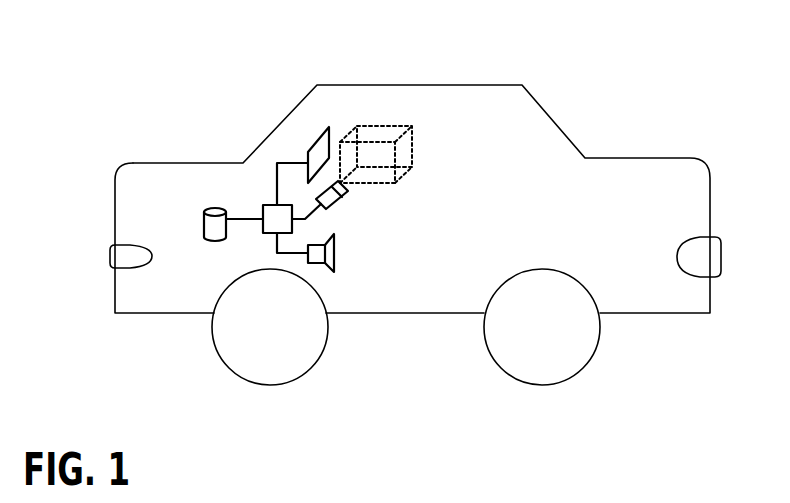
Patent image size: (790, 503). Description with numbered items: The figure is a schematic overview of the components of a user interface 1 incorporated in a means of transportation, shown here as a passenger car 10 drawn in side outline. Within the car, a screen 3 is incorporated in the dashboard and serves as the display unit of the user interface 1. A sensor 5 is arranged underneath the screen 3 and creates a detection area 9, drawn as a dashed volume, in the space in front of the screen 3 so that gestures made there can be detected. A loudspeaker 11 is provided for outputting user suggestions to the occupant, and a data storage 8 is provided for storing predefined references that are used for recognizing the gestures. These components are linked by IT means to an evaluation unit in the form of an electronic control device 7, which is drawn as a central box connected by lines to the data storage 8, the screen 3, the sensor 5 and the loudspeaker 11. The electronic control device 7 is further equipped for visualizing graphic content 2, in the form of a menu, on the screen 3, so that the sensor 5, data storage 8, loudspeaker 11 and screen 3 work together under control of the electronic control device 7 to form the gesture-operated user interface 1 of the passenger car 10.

The user interface 1 is at (256, 131).
The graphic content 2 is at (334, 147).
The screen 3 is at (310, 148).
The sensor 5 is at (336, 200).
The electronic control device 7 is at (270, 232).
The data storage 8 is at (207, 213).
The detection area 9 is at (387, 125).
The passenger car 10 is at (612, 98).
The loudspeaker 11 is at (317, 262).